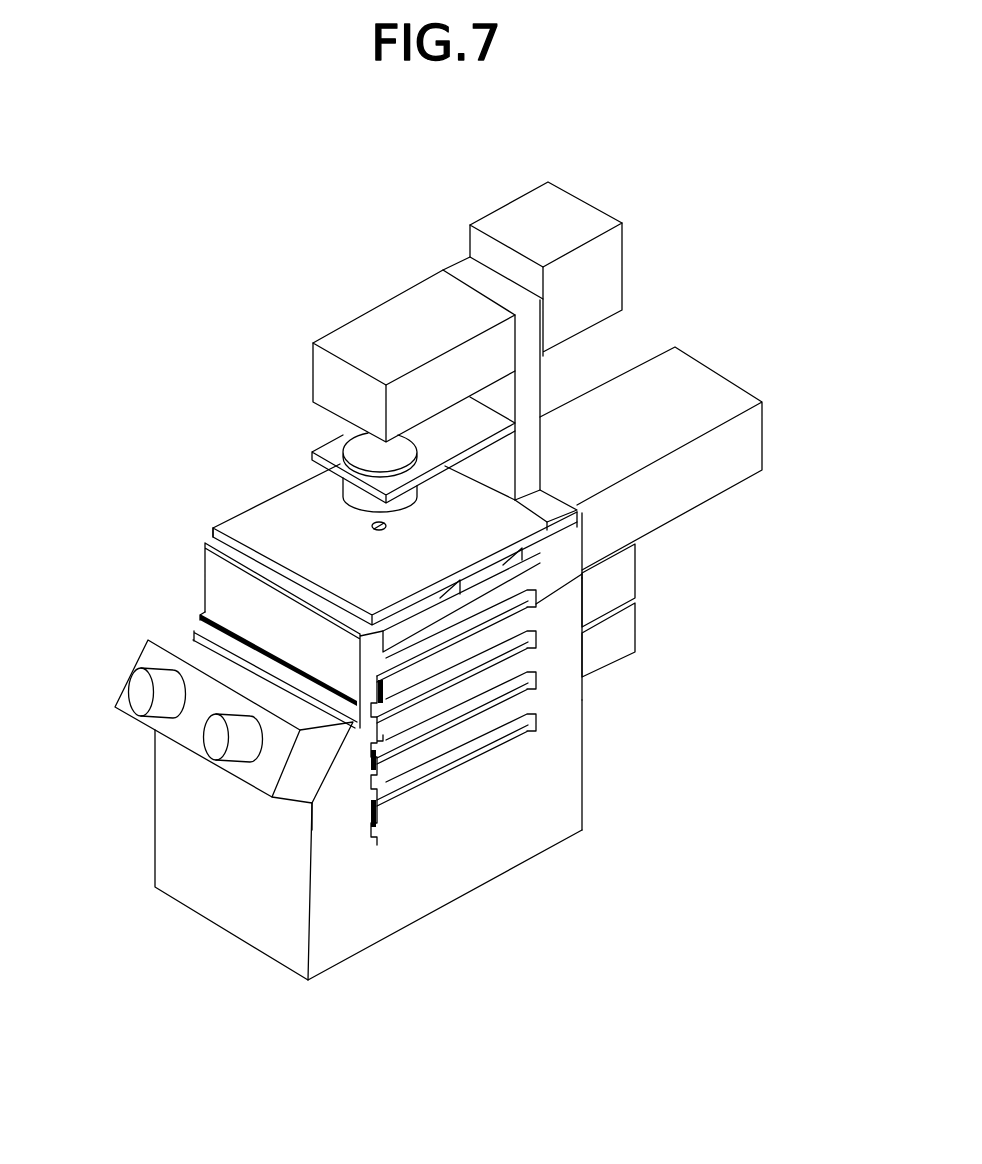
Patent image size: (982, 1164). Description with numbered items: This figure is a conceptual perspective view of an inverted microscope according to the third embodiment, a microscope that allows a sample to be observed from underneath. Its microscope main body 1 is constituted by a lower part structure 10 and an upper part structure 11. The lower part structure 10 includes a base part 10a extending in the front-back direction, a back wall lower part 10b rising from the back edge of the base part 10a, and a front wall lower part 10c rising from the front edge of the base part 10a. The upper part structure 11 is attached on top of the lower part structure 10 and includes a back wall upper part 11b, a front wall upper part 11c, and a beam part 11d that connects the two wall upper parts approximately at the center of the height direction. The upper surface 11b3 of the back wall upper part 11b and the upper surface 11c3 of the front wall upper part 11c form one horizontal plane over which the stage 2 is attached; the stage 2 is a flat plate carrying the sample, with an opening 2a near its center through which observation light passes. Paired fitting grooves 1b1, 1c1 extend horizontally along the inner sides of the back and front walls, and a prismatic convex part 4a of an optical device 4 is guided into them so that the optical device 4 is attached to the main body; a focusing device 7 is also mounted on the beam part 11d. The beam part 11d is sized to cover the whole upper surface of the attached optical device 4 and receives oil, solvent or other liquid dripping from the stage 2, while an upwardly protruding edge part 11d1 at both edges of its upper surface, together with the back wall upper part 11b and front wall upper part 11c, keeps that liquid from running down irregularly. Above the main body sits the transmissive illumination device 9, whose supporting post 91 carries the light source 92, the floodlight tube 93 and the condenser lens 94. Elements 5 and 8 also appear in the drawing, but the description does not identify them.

The microscope main body 1 is at (50, 798).
The stage 2 is at (250, 513).
The opening 2a is at (371, 525).
The optical device 4 is at (448, 773).
The convex part 4a is at (583, 575).
The cassettes 5 is at (750, 437).
The focusing device 7 is at (494, 565).
The rail block 8 is at (252, 775).
The transmissive illumination device 9 is at (594, 203).
The lower part structure 10 is at (165, 792).
The base part 10a is at (445, 888).
The back wall lower part 10b is at (573, 663).
The front wall lower part 10c is at (348, 820).
The upper part structure 11 is at (205, 590).
The back wall upper part 11b is at (630, 462).
The upper surface of the back wall upper part 11b3 is at (553, 492).
The front wall upper part 11c is at (372, 612).
The upper surface of the front wall upper part 11c3 is at (210, 525).
The beam part 11d is at (477, 607).
The edge part 11d1 is at (417, 620).
The fitting groove 1b1 is at (593, 705).
The fitting groove 1c1 is at (373, 683).
The supporting post 91 is at (541, 388).
The light source 92 is at (513, 213).
The floodlight tube 93 is at (372, 327).
The condenser lens 94 is at (345, 434).